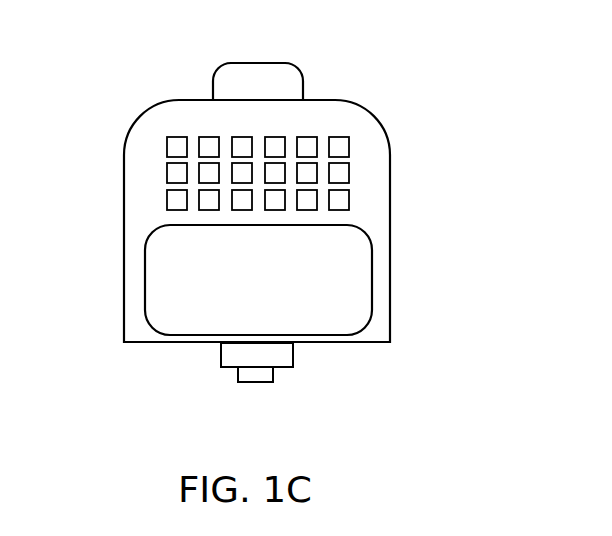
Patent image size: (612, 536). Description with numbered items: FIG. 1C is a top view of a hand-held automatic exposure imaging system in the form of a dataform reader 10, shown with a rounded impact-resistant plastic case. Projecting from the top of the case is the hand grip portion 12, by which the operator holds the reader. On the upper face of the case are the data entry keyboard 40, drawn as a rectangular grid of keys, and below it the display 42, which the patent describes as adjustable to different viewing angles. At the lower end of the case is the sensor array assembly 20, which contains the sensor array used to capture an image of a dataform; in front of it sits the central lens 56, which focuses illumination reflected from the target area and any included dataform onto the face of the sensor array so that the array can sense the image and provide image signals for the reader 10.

The dataform reader 10 is at (124, 207).
The hand grip portion 12 is at (258, 62).
The sensor array assembly 20 is at (220, 358).
The data entry keyboard 40 is at (349, 173).
The display 42 is at (362, 284).
The central lens 56 is at (258, 382).